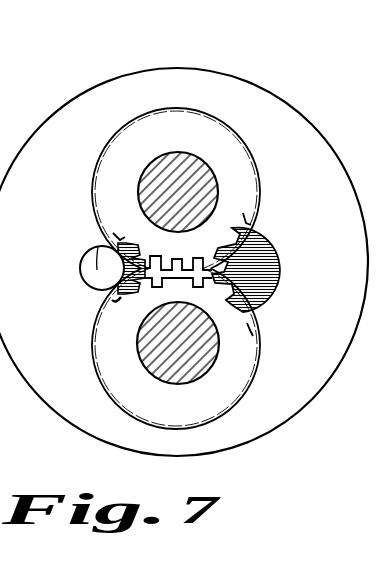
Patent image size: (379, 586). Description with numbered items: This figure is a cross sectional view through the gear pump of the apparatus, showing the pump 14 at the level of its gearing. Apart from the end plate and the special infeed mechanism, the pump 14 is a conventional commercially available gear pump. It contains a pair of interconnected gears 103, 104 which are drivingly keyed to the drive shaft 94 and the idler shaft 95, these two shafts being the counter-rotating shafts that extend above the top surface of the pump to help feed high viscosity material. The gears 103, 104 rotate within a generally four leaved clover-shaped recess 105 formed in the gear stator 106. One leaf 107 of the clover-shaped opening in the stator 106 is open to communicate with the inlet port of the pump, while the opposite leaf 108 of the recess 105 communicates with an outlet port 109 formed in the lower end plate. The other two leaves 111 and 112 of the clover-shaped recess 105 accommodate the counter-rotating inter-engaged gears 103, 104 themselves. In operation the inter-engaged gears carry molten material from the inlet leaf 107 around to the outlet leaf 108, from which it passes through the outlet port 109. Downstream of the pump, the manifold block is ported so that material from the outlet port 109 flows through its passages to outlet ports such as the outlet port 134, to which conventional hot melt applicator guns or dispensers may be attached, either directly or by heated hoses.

The pump 14 is at (302, 80).
The drive shaft 94 is at (180, 172).
The idler shaft 95 is at (176, 370).
The gear 103 is at (220, 226).
The gear 104 is at (237, 347).
The clover-shaped recess 105 is at (254, 165).
The gear stator 106 is at (202, 80).
The leaf 107 is at (285, 265).
The leaf 108 is at (82, 274).
The outlet port 109 is at (100, 246).
The leaf 111 is at (212, 418).
The leaf 112 is at (215, 118).
The outlet port 134 is at (31, 100).